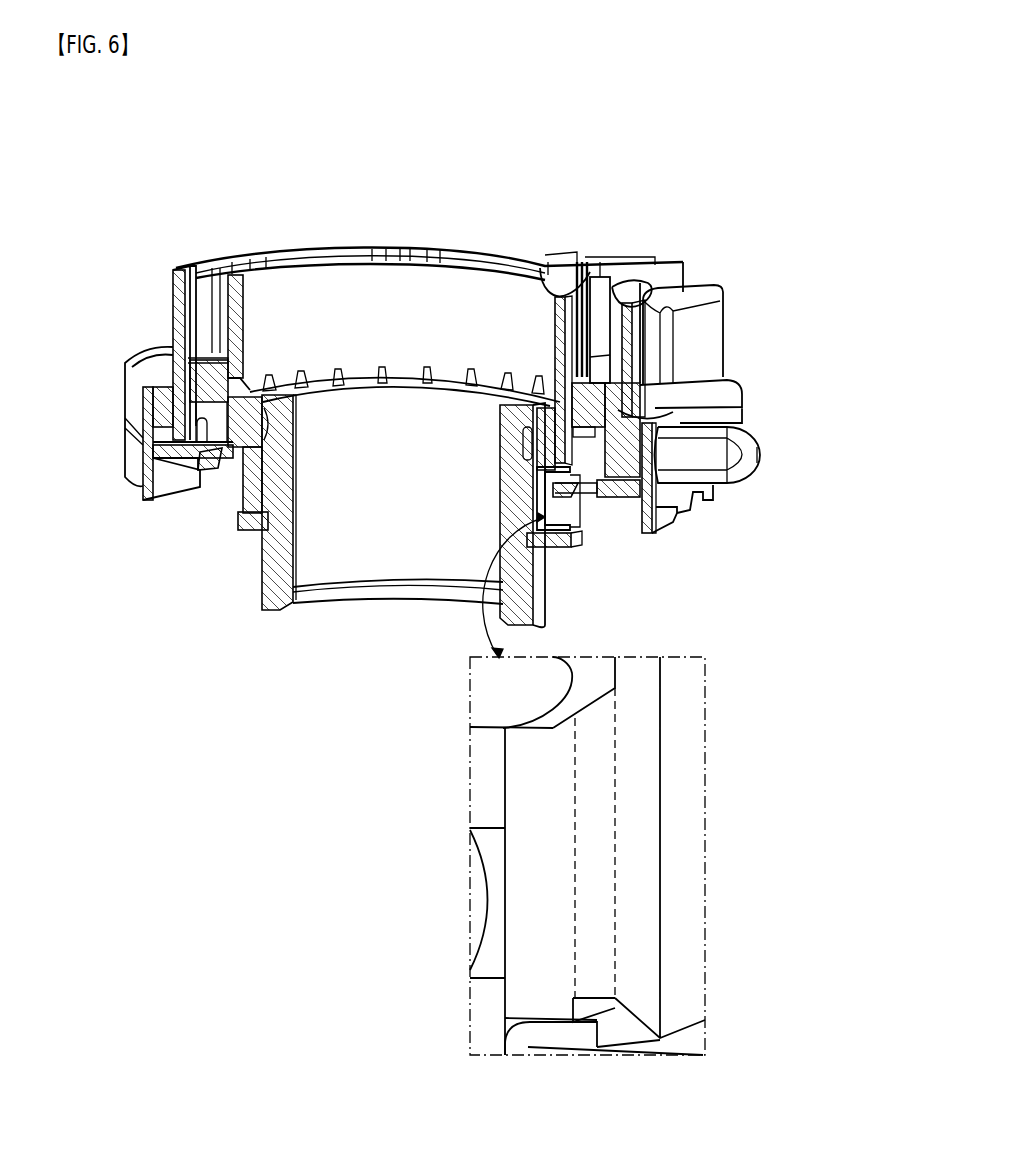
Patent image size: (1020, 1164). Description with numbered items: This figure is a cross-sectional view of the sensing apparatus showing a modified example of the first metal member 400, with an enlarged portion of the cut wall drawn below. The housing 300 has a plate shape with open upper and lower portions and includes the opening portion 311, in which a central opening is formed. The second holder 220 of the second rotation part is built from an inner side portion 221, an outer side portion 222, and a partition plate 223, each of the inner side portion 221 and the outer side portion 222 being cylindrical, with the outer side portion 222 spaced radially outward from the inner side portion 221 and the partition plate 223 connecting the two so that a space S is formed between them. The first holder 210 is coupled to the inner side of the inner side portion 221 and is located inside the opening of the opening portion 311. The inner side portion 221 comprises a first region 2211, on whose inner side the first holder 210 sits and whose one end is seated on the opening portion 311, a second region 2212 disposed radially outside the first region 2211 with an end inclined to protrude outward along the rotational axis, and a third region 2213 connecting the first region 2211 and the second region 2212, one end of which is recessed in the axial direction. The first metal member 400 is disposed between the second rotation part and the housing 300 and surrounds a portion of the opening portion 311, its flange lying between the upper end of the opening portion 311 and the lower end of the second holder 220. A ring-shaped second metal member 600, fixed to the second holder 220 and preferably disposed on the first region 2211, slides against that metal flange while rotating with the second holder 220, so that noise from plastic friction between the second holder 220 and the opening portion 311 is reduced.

The space S is at (230, 313).
The first holder 210 is at (278, 576).
The second holder 220 is at (633, 153).
The inner side portion 221 is at (515, 263).
The outer side portion 222 is at (578, 262).
The partition plate 223 is at (603, 280).
The first region 2211 is at (545, 807).
The second region 2212 is at (637, 927).
The third region 2213 is at (590, 863).
The housing 300 is at (743, 300).
The opening portion 311 is at (547, 502).
The first metal member 400 is at (580, 537).
The second metal member 600 is at (620, 488).